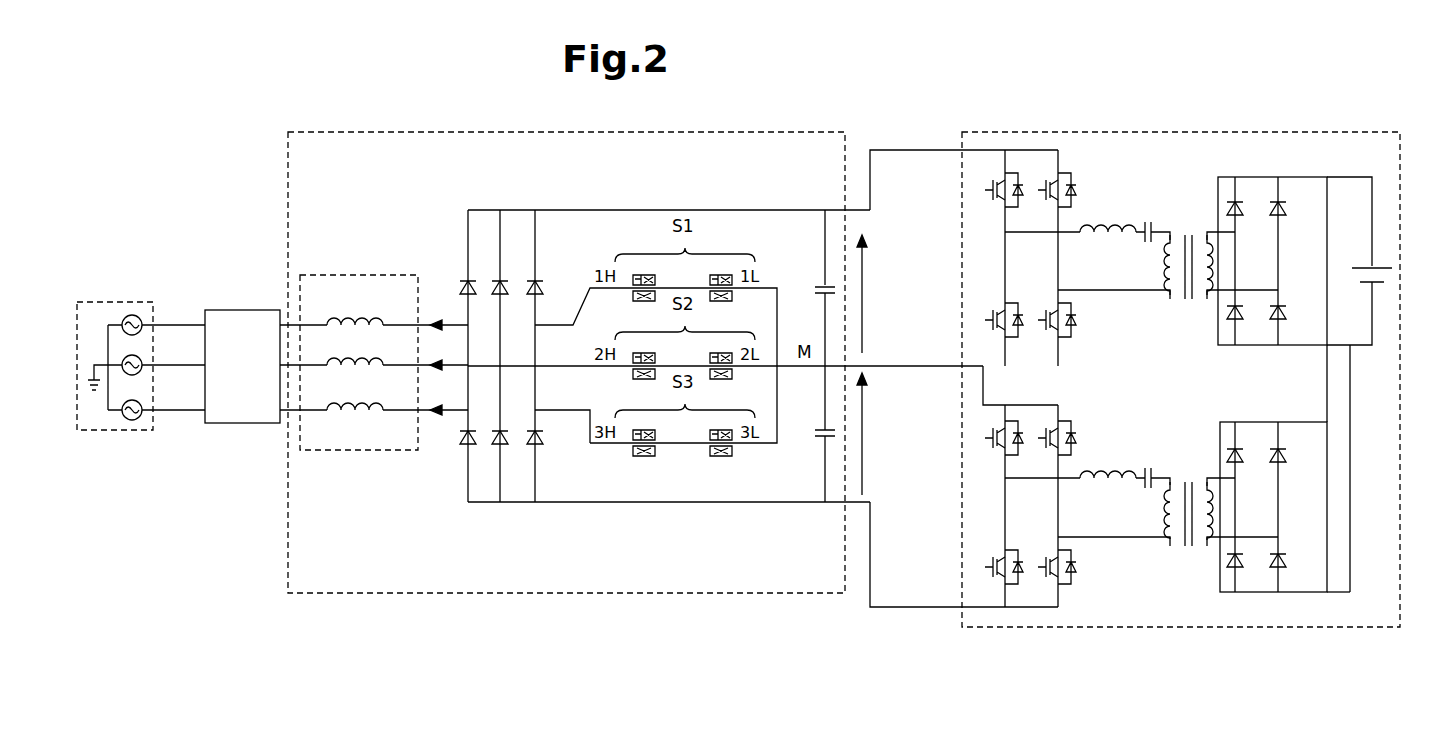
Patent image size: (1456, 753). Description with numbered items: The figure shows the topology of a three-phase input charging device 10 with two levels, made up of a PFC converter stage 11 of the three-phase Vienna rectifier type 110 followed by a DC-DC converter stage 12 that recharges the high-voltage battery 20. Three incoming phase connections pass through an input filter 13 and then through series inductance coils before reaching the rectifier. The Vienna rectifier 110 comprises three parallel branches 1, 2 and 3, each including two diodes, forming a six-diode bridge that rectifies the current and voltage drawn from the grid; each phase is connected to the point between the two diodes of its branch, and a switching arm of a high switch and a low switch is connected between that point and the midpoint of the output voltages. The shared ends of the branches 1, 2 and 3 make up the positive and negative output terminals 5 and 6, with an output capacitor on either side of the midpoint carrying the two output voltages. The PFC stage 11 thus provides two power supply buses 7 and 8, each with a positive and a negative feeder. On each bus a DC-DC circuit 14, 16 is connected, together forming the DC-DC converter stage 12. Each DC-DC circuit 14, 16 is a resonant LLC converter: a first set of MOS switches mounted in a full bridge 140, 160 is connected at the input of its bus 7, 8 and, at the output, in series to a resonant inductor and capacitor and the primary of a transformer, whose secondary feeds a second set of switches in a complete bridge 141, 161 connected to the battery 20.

The charging device 10 is at (245, 180).
The PFC converter stage 11 is at (408, 132).
The three-phase Vienna rectifier 110 is at (288, 530).
The input filter 13 is at (253, 377).
The first branch 1 is at (468, 485).
The second branch 2 is at (500, 485).
The third branch 3 is at (535, 485).
The positive output terminal 5 is at (825, 210).
The negative output terminal 6 is at (825, 502).
The first power supply bus 7 is at (921, 150).
The second power supply bus 8 is at (907, 610).
The DC-DC converter stage 12 is at (1088, 132).
The first DC-DC circuit 14 is at (1164, 174).
The first set of switches in a full bridge 140 is at (1095, 333).
The second set of switches in a complete bridge 141 is at (1258, 177).
The second DC-DC circuit 16 is at (1156, 600).
The first set of switches in a full bridge 160 is at (990, 545).
The second set of switches in a complete bridge 161 is at (1290, 515).
The high-voltage battery 20 is at (1378, 266).